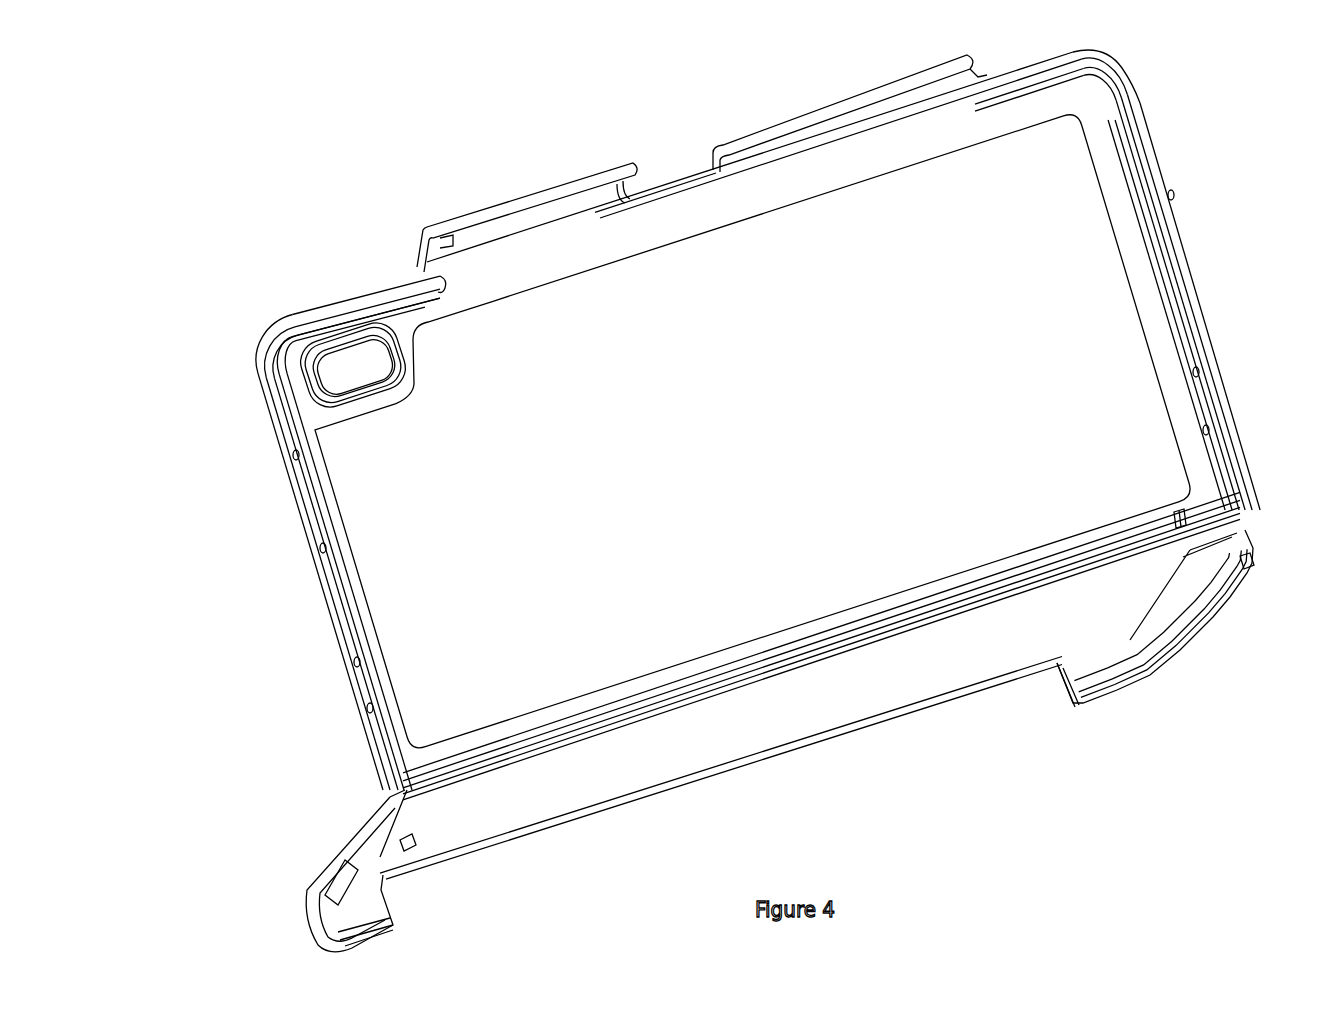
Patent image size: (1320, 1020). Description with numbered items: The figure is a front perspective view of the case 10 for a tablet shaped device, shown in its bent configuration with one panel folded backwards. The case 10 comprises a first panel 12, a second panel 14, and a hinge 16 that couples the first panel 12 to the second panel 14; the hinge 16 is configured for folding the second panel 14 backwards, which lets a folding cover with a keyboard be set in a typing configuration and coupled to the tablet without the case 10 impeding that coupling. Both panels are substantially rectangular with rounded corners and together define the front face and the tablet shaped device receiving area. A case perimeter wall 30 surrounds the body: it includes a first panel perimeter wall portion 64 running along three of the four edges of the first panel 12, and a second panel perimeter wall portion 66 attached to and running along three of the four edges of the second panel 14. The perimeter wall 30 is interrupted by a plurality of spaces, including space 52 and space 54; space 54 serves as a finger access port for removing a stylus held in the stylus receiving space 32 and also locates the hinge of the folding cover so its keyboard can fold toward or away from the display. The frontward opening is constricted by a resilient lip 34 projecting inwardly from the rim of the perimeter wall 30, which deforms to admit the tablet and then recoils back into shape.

The case 10 is at (155, 108).
The first panel 12 is at (368, 286).
The second panel 14 is at (1223, 605).
The hinge 16 is at (1183, 520).
The case perimeter wall 30 is at (1153, 150).
The stylus receiving space 32 is at (503, 204).
The resilient lip 34 is at (1190, 300).
The space 52 is at (652, 148).
The space 54 is at (428, 912).
The first panel perimeter wall portion 64 is at (330, 568).
The second panel perimeter wall portion 66 is at (302, 902).